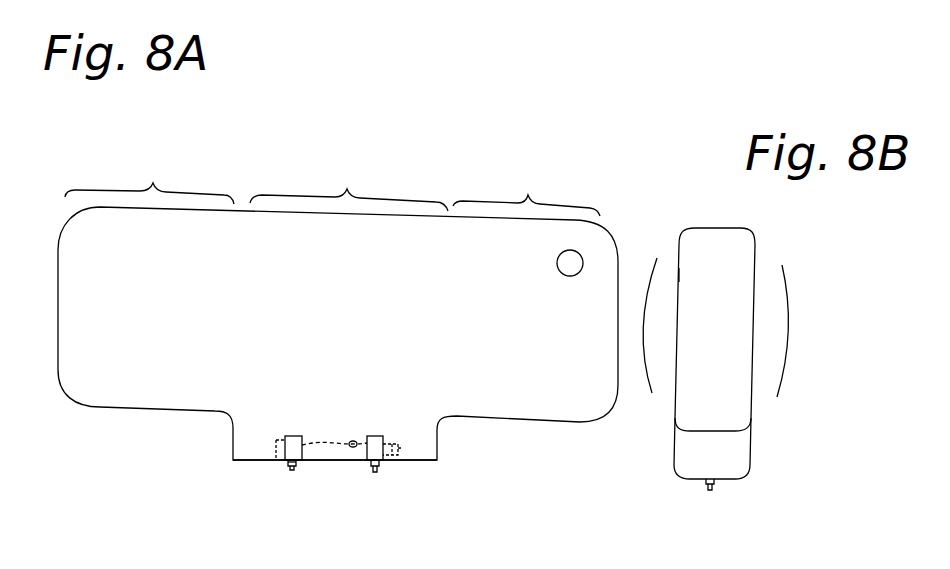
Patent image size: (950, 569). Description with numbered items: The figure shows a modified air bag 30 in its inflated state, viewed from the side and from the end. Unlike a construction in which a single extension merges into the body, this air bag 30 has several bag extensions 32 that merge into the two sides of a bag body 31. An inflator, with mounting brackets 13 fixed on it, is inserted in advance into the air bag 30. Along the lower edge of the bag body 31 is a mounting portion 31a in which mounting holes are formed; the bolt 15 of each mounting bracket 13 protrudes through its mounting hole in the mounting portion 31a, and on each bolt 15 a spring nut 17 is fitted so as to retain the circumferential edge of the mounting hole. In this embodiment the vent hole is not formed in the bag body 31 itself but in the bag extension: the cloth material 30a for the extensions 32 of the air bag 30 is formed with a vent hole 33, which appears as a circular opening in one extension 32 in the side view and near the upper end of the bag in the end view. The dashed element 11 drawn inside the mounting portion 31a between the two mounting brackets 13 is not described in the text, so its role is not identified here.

In FIG. 8A, the air bag 30 is at (449, 180).
In FIG. 8B, the air bag 30 is at (678, 217).
In FIG. 8B, the cloth material 30a is at (676, 360).
In FIG. 8A, the bag body 31 is at (349, 185).
In FIG. 8A, the bag extensions 32 is at (332, 185).
In FIG. 8A, the vent hole 33 is at (570, 276).
In FIG. 8B, the vent hole 33 is at (680, 275).
In FIG. 8A, the mounting portion 31a is at (357, 463).
In FIG. 8A, the mounting bracket 13 is at (374, 433).
In FIG. 8A, the lead wire 11 is at (337, 453).
In FIG. 8A, the bolt 15 is at (300, 467).
In FIG. 8A, the spring nut 17 is at (288, 462).